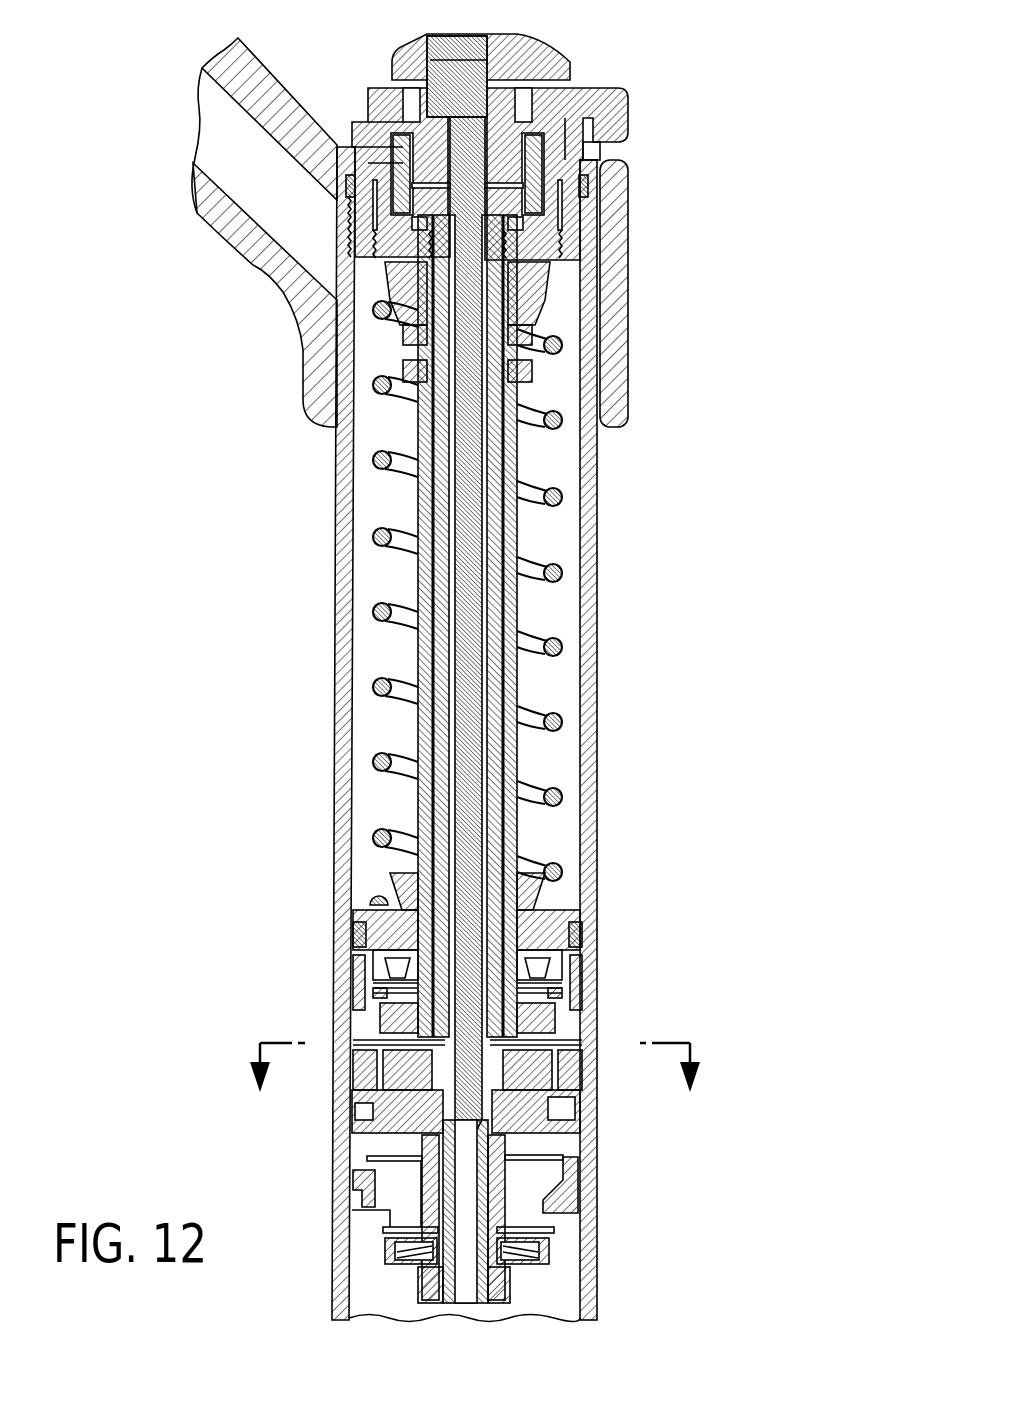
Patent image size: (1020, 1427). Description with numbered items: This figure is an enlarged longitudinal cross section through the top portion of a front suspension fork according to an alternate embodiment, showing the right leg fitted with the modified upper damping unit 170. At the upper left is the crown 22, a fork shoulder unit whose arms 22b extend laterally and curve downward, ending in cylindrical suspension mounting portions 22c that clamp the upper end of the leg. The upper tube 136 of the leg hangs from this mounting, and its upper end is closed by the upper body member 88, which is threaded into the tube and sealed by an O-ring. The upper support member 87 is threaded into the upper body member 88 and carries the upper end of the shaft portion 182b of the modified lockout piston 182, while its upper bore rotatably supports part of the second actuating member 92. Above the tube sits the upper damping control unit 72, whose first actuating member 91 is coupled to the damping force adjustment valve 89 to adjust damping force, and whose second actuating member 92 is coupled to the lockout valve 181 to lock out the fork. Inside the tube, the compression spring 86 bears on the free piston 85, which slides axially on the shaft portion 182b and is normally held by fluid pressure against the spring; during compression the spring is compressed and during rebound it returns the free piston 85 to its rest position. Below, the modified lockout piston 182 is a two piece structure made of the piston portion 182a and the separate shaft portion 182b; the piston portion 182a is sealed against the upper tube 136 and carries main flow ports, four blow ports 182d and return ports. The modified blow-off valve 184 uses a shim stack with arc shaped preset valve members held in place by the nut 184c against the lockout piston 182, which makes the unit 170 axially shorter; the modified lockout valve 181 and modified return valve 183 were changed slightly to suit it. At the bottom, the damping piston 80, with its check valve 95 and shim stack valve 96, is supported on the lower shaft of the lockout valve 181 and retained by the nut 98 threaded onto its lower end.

The crown 22 is at (276, 62).
The arms 22b is at (256, 266).
The suspension mounting portions 22c is at (612, 356).
The upper damping control unit 72 is at (633, 45).
The first actuating member 91 is at (533, 33).
The second actuating member 92 is at (626, 82).
The upper body member 88 is at (603, 151).
The upper support member 87 is at (547, 295).
The upper tube 136 is at (605, 601).
The damping force adjustment valve 89 is at (472, 690).
The compression spring 86 is at (560, 726).
The shaft portion 182b is at (556, 845).
The free piston 85 is at (454, 998).
The upper damping unit 170 is at (347, 923).
The nut 184c is at (560, 957).
The blow-off valve 184 is at (560, 997).
The blow ports 182d is at (372, 1025).
The piston portion 182a is at (570, 1032).
The lockout piston 182 is at (350, 1092).
The lockout valve 181 is at (357, 1143).
The return valve 183 is at (575, 1108).
The shim stack valve 96 is at (560, 1145).
The damping piston 80 is at (567, 1213).
The check valve 95 is at (378, 1250).
The nut 98 is at (507, 1284).